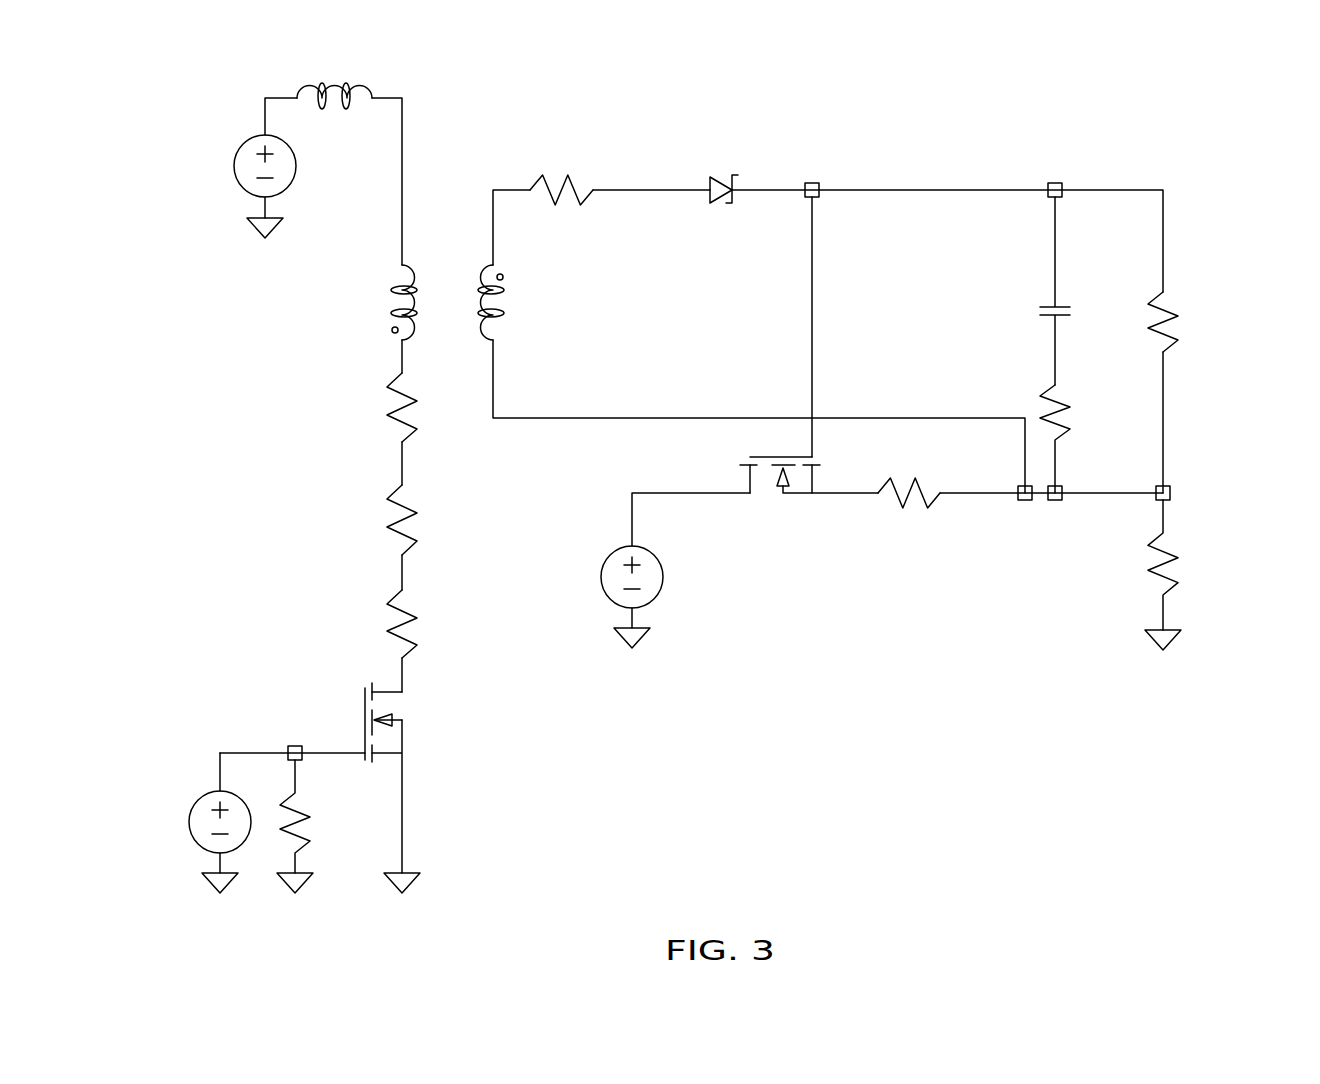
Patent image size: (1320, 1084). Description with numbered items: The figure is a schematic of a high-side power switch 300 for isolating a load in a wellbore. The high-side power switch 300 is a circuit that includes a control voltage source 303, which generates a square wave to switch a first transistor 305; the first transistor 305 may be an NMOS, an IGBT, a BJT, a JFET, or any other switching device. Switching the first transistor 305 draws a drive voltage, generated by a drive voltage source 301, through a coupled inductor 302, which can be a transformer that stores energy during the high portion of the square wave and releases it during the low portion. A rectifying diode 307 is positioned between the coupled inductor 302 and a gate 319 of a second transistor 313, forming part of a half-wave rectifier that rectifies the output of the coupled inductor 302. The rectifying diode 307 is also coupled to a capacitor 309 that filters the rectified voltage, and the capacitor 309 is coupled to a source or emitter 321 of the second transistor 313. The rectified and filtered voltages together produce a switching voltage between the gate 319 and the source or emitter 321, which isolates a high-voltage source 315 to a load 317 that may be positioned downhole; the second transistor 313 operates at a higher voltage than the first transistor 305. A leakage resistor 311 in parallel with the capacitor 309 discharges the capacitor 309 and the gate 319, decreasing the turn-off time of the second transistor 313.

The high-side power switch 300 is at (275, 390).
The drive voltage source 301 is at (250, 143).
The coupled inductor 302 is at (447, 228).
The control voltage source 303 is at (207, 797).
The first transistor 305 is at (365, 722).
The rectifying diode 307 is at (738, 176).
The capacitor 309 is at (1083, 314).
The leakage resistor 311 is at (1178, 329).
The second transistor 313 is at (773, 505).
The high-voltage source 315 is at (606, 560).
The load 317 is at (1178, 570).
The gate 319 is at (772, 444).
The source or emitter 321 is at (810, 507).